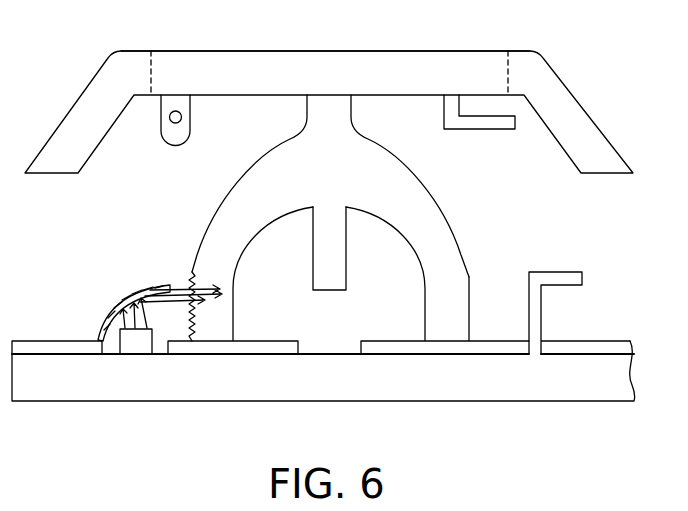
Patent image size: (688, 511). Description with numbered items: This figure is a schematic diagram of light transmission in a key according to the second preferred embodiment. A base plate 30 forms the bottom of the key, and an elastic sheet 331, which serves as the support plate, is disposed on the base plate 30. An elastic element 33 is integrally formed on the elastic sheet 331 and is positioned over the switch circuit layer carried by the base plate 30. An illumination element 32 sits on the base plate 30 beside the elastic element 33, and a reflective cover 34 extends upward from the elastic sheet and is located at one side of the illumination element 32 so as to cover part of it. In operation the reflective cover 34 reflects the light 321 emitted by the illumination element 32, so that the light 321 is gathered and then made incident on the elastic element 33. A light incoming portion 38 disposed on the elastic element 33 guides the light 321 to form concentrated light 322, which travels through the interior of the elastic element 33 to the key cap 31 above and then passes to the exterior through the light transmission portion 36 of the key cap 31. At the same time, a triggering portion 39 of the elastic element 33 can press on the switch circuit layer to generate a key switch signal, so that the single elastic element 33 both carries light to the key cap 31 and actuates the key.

The base plate 30 is at (133, 384).
The key cap 31 is at (327, 93).
The illumination element 32 is at (130, 342).
The elastic element 33 is at (392, 224).
The reflective cover 34 is at (112, 307).
The light transmission portion 36 is at (424, 63).
The light incoming portion 38 is at (195, 335).
The triggering portion 39 is at (328, 295).
The light 321 is at (148, 318).
The concentrated light 322 is at (192, 272).
The elastic sheet 331 is at (584, 348).